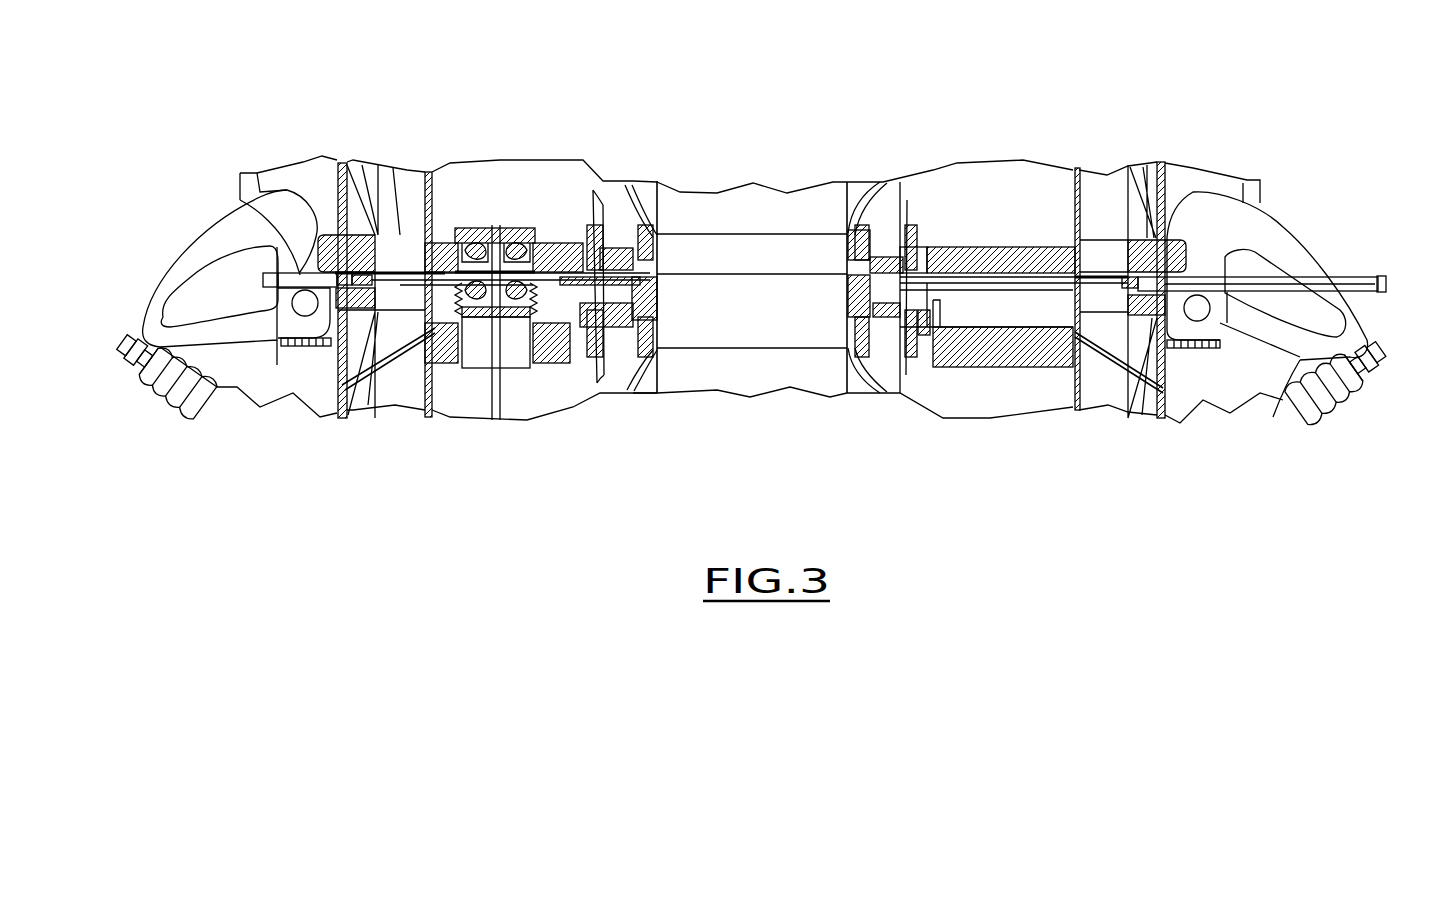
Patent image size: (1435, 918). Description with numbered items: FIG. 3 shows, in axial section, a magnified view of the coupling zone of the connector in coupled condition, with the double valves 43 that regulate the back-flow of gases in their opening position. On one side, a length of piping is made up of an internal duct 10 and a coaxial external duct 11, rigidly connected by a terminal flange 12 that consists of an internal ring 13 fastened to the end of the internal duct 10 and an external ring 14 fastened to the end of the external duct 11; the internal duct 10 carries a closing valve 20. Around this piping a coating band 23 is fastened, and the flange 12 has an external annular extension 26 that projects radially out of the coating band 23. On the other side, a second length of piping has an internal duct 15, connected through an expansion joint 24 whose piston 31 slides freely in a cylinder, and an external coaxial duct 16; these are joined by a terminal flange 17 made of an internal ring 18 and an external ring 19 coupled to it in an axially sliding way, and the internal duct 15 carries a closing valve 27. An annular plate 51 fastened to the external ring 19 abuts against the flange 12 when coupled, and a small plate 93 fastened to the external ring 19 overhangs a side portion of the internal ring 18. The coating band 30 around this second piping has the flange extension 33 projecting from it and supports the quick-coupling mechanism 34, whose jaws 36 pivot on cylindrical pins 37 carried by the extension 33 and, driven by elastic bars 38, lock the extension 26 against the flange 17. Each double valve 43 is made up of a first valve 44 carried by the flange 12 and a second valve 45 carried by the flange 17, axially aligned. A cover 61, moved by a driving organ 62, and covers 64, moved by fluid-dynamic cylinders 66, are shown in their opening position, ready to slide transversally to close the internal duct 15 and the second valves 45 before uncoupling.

The internal duct 10 is at (585, 200).
The external duct 11 is at (443, 225).
The terminal flange 12 is at (1010, 227).
The internal ring 13 is at (893, 222).
The external ring 14 is at (965, 247).
The internal duct 15 is at (597, 360).
The external coaxial duct 16 is at (1077, 410).
The terminal flange 17 is at (1003, 392).
The internal ring 18 is at (880, 340).
The external ring 19 is at (955, 355).
The closing valve 20 is at (672, 197).
The coating band 23 is at (313, 212).
The expansion joint 24 is at (350, 165).
The external annular extension 26 is at (376, 228).
The closing valve 27 is at (682, 370).
The coating band 30 is at (343, 418).
The piston 31 is at (378, 310).
The external annular extension 33 is at (340, 308).
The quick-coupling mechanism 34 is at (1352, 228).
The jaws 36 is at (187, 262).
The cylindrical pins 37 is at (303, 312).
The elastic bars 38 is at (176, 395).
The double valves 43 is at (502, 223).
The first valve 44 is at (470, 210).
The second valve 45 is at (470, 372).
The annular plate 51 is at (560, 300).
The cover 61 is at (1047, 247).
The driving organ 62 is at (1387, 288).
The covers 64 is at (395, 270).
The fluid-dynamic cylinders 66 is at (240, 202).
The small plate 93 is at (873, 292).